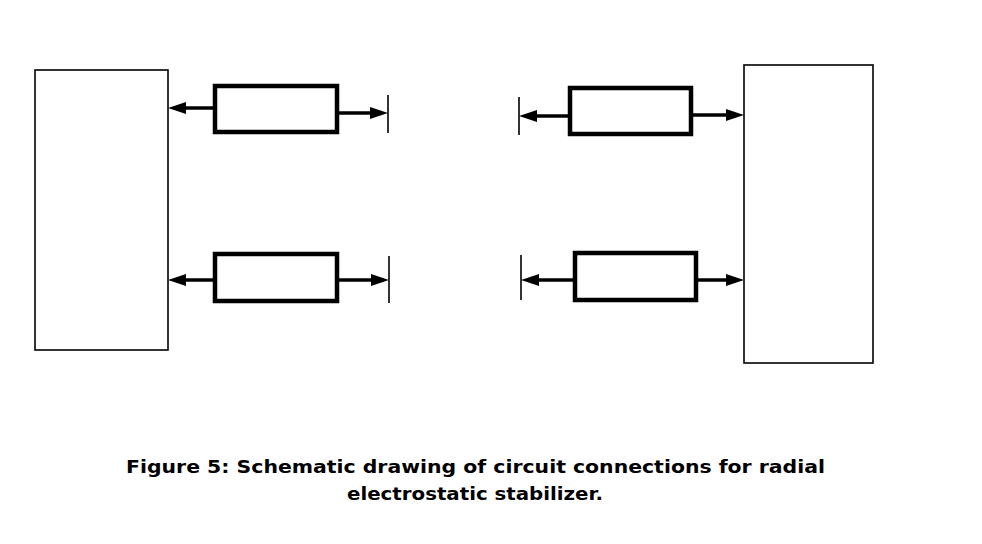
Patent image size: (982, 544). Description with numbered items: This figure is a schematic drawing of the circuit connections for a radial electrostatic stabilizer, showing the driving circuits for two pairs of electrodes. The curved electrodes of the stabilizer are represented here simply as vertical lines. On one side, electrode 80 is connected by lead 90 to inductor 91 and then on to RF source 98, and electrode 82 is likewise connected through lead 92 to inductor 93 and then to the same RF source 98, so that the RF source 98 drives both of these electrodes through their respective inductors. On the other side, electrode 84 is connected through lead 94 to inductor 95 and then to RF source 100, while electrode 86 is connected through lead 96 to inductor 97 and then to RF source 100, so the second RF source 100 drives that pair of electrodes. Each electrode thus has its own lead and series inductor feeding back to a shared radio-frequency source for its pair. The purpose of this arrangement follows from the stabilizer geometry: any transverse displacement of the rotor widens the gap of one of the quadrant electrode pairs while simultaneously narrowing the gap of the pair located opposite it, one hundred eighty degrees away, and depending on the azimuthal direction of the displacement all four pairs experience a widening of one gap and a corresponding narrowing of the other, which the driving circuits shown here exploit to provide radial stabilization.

The electrode 80 is at (395, 100).
The electrode 82 is at (395, 268).
The electrode 84 is at (519, 118).
The electrode 86 is at (520, 290).
The lead 90 is at (355, 108).
The inductor 91 is at (250, 84).
The lead 92 is at (355, 283).
The inductor 93 is at (250, 303).
The lead 94 is at (552, 110).
The inductor 95 is at (618, 86).
The lead 96 is at (548, 283).
The inductor 97 is at (632, 302).
The RF source 98 is at (127, 70).
The RF source 100 is at (783, 65).